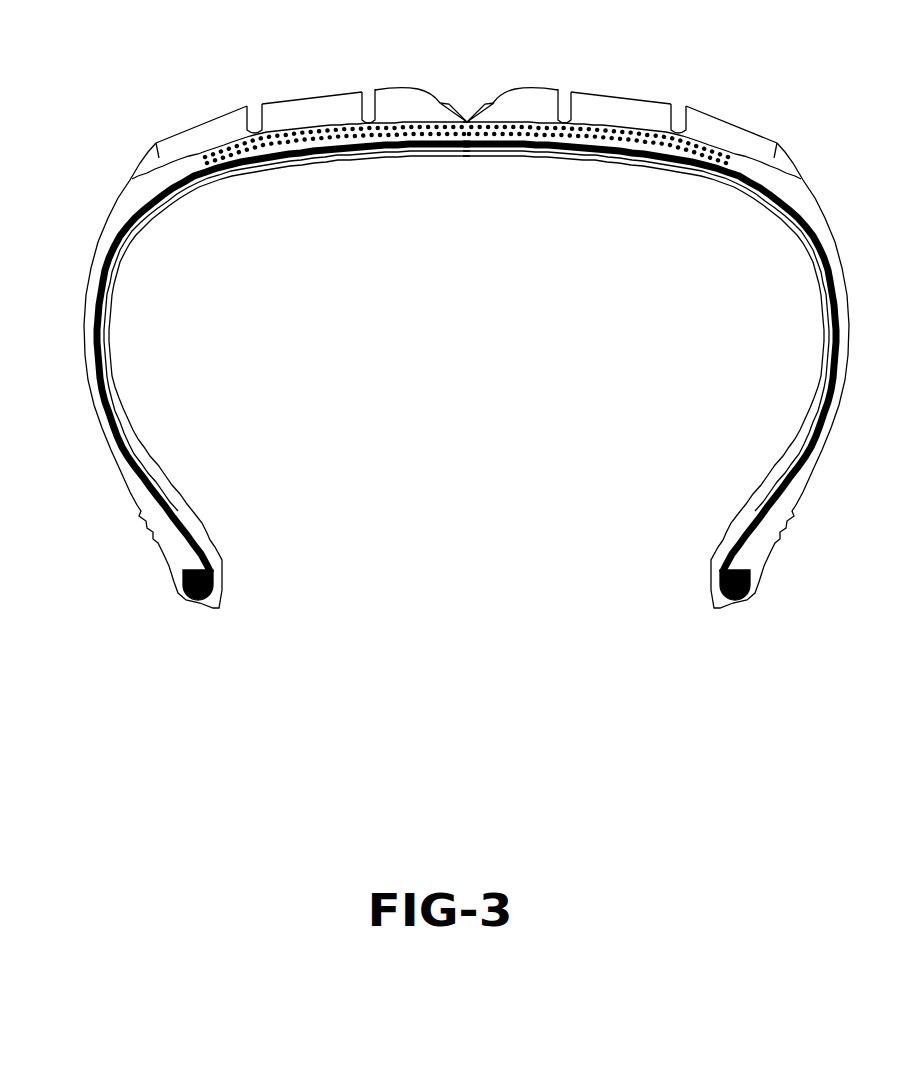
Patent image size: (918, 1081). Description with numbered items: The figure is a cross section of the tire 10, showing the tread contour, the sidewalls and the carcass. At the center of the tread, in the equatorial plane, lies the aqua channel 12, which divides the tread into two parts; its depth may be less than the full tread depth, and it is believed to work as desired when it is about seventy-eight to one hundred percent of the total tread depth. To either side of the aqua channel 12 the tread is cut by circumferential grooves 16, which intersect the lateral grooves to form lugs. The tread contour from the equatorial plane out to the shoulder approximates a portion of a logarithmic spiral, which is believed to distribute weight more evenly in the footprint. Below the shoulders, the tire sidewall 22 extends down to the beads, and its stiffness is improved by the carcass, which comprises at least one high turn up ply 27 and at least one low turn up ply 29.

The tire 10 is at (357, 655).
The aqua channel 12 is at (467, 121).
The circumferential grooves 16 is at (254, 130).
The tire sidewall 22 is at (84, 322).
The high turn up ply 27 is at (127, 466).
The low turn up ply 29 is at (184, 563).